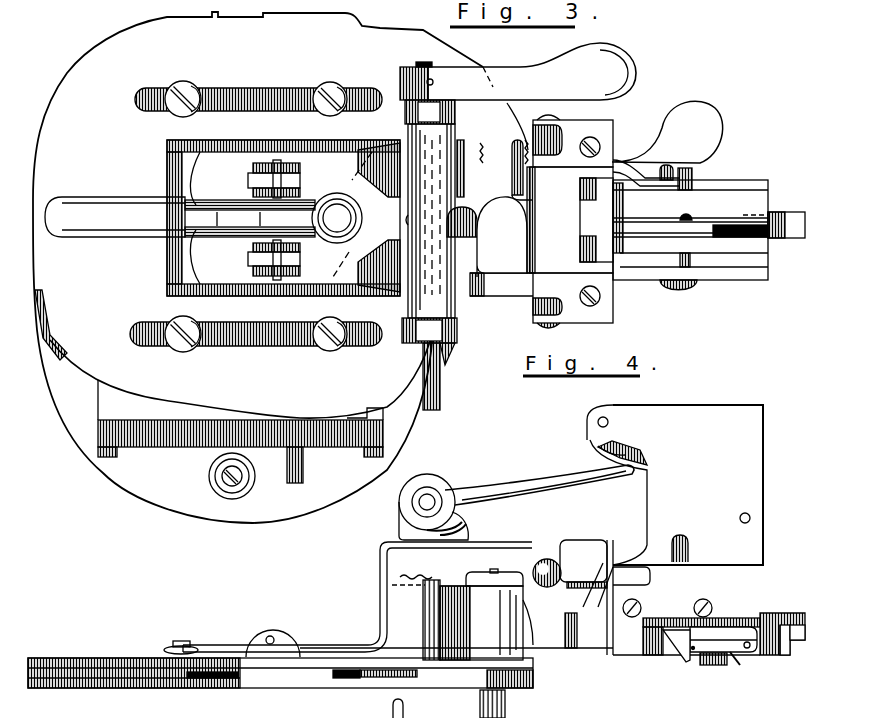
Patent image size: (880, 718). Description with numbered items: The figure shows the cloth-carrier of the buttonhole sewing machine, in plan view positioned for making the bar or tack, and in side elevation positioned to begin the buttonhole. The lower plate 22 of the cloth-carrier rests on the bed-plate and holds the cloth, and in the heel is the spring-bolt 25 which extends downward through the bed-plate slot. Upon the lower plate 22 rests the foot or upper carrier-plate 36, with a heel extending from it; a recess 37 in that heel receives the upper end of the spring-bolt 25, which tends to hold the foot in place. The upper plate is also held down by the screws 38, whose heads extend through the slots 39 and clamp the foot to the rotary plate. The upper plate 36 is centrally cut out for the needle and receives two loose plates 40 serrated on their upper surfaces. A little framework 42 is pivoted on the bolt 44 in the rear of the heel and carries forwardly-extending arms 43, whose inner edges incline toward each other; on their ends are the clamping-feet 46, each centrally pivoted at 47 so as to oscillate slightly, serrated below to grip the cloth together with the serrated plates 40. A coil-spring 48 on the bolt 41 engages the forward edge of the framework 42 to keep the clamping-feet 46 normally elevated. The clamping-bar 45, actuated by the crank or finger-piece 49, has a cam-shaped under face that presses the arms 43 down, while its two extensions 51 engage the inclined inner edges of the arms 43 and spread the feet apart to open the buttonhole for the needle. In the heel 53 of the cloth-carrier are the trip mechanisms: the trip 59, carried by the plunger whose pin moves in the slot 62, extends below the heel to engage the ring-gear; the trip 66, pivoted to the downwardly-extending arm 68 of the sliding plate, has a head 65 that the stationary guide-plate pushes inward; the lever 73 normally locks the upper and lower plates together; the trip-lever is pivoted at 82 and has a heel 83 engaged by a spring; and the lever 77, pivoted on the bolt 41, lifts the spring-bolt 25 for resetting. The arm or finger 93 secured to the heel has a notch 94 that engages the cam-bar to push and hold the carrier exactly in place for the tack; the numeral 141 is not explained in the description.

In FIG. 3, the lower plate of the cloth-carrier 22 is at (197, 476).
In FIG. 4, the spring-bolt 25 is at (507, 705).
In FIG. 3, the foot or upper carrier-plate 36 is at (280, 267).
In FIG. 4, the foot or upper carrier-plate 36 is at (100, 660).
In FIG. 3, the recess 37 is at (487, 237).
In FIG. 3, the screws 38 is at (183, 343).
In FIG. 4, the screws 38 is at (168, 655).
In FIG. 3, the slots 39 is at (243, 96).
In FIG. 3, the loose plates 40 is at (168, 150).
In FIG. 3, the bolt 41 is at (550, 326).
In FIG. 4, the bolt 41 is at (551, 560).
In FIG. 3, the framework 42 is at (603, 219).
In FIG. 3, the forwardly-extending arms 43 is at (303, 173).
In FIG. 4, the forwardly-extending arms 43 is at (382, 578).
In FIG. 3, the bolt 44 is at (447, 343).
In FIG. 4, the bolt 44 is at (473, 614).
In FIG. 3, the clamping-bar 45 is at (429, 221).
In FIG. 3, the clamping-feet 46 is at (203, 220).
In FIG. 4, the clamping-feet 46 is at (218, 656).
In FIG. 4, the pivot 47 is at (287, 630).
In FIG. 3, the coil-spring 48 is at (514, 153).
In FIG. 3, the crank or finger-piece 49 is at (532, 71).
In FIG. 4, the crank or finger-piece 49 is at (522, 484).
In FIG. 4, the extensions 51 is at (475, 523).
In FIG. 3, the heel of the cloth-carrier 53 is at (690, 230).
In FIG. 4, the heel of the cloth-carrier 53 is at (659, 484).
In FIG. 4, the trip 59 is at (710, 660).
In FIG. 4, the slot 62 is at (690, 553).
In FIG. 3, the head of the trip 65 is at (691, 285).
In FIG. 4, the trip 66 is at (717, 637).
In FIG. 4, the downwardly-extending arm 68 is at (737, 654).
In FIG. 3, the lever 73 is at (710, 186).
In FIG. 3, the lever 77 is at (667, 132).
In FIG. 4, the pivot 82 is at (598, 421).
In FIG. 4, the heel of the trip-lever 83 is at (597, 448).
In FIG. 3, the arm or finger 93 is at (788, 215).
In FIG. 4, the arm or finger 93 is at (777, 613).
In FIG. 4, the notch 94 is at (783, 640).
In FIG. 3, the pivot pin 141 is at (425, 65).
In FIG. 4, the pivot pin 141 is at (432, 500).